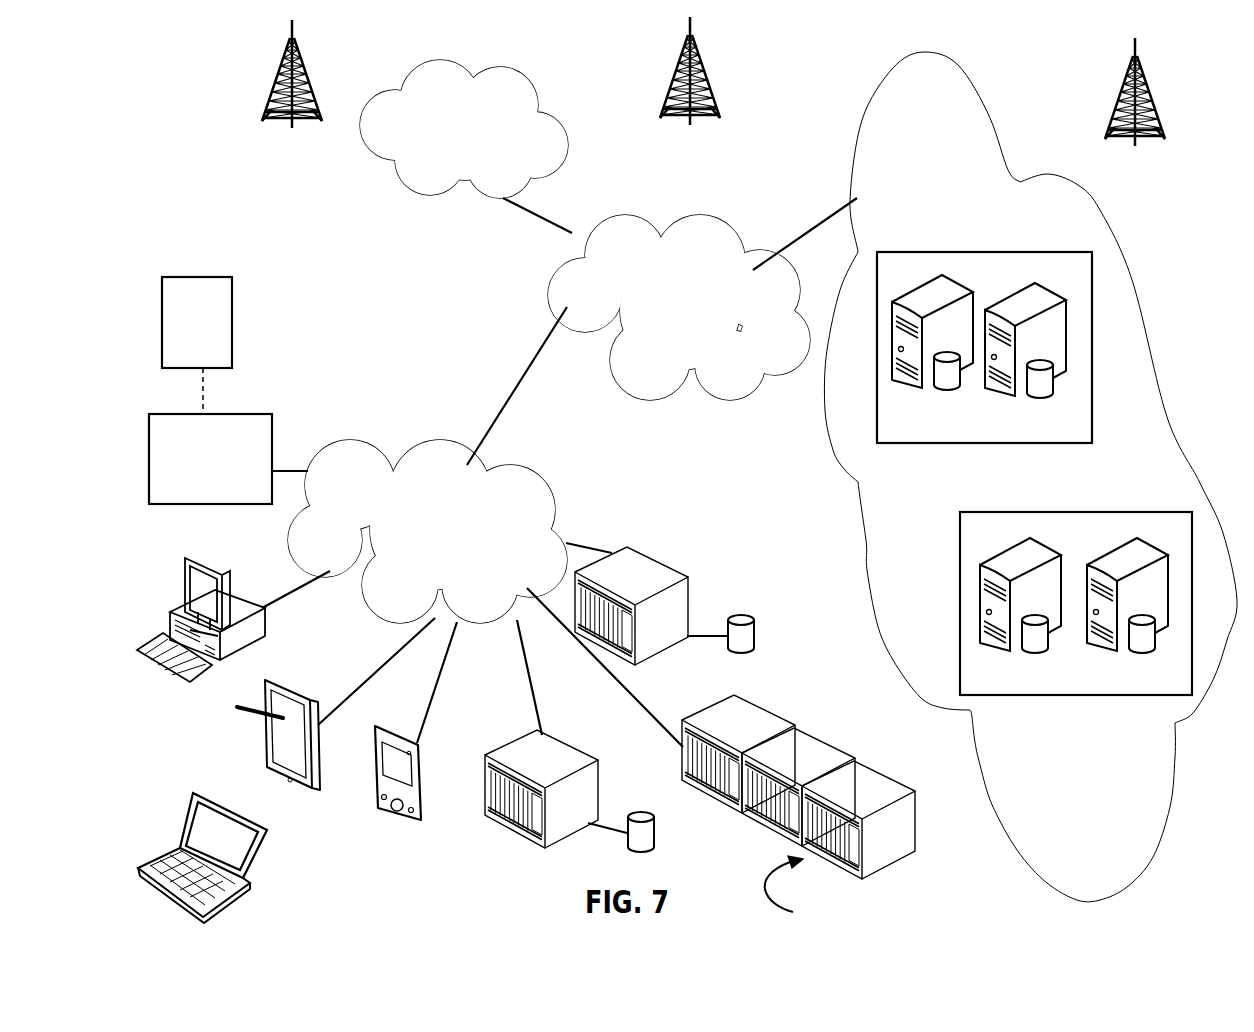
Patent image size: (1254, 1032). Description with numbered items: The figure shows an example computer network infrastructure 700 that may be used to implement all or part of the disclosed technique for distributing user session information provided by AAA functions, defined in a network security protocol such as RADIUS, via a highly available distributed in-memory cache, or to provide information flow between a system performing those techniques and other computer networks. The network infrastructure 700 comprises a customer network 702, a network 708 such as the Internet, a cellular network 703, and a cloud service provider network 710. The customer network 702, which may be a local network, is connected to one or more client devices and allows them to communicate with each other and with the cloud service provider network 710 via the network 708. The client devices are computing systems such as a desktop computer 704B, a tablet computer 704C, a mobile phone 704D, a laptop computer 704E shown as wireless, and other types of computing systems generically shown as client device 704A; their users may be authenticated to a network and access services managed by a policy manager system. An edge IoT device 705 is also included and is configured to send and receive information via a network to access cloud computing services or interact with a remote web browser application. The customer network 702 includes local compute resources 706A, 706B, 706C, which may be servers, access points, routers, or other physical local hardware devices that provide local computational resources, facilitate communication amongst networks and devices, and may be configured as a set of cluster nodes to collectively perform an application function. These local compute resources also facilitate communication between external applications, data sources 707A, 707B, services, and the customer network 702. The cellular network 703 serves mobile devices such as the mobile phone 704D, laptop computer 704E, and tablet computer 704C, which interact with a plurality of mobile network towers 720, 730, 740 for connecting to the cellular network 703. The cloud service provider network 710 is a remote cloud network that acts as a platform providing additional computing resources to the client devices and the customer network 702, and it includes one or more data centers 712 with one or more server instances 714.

The computer network infrastructure 700 is at (218, 128).
The customer network 702 is at (397, 445).
The cellular network 703 is at (488, 82).
The client device 704A is at (237, 414).
The desktop computer 704B is at (213, 567).
The tablet computer 704C is at (292, 683).
The mobile phone 704D is at (422, 738).
The laptop computer 704E is at (263, 835).
The edge IoT device 705 is at (177, 277).
The local compute resource 706A is at (543, 758).
The local compute resource 706B is at (687, 592).
The local compute resources 706C is at (755, 703).
The data source 707A is at (650, 813).
The data source 707B is at (745, 618).
The network 708 is at (667, 228).
The cloud service provider network 710 is at (1128, 260).
The data center 712 is at (917, 252).
The server instance 714 is at (941, 388).
The mobile network tower 720 is at (690, 130).
The mobile network tower 730 is at (292, 132).
The mobile network tower 740 is at (1135, 147).